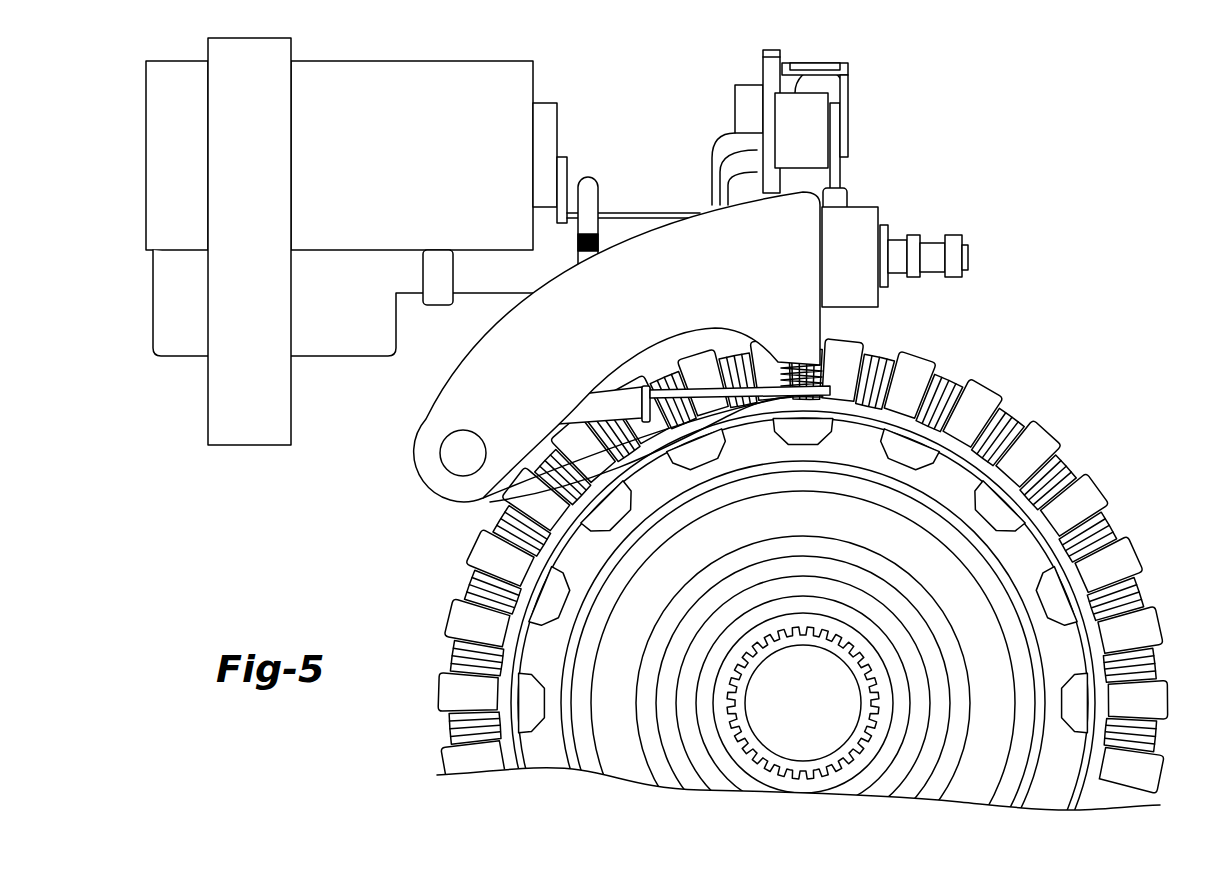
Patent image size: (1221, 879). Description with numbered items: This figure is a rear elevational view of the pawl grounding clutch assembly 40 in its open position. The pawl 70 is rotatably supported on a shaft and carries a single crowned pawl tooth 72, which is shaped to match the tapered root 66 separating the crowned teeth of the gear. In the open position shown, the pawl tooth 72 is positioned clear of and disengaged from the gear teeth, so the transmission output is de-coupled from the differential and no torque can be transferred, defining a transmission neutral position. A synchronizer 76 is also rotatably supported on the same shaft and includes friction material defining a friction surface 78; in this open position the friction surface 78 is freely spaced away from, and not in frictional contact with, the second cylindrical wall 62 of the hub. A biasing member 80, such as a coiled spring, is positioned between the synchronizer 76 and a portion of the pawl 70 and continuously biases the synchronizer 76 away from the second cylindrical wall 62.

The pawl grounding clutch assembly 40 is at (968, 128).
The second cylindrical wall 62 is at (945, 500).
The tapered root 66 is at (812, 430).
The pawl 70 is at (667, 294).
The pawl tooth 72 is at (818, 368).
The synchronizer 76 is at (574, 467).
The friction surface 78 is at (797, 400).
The biasing member 80 is at (782, 366).